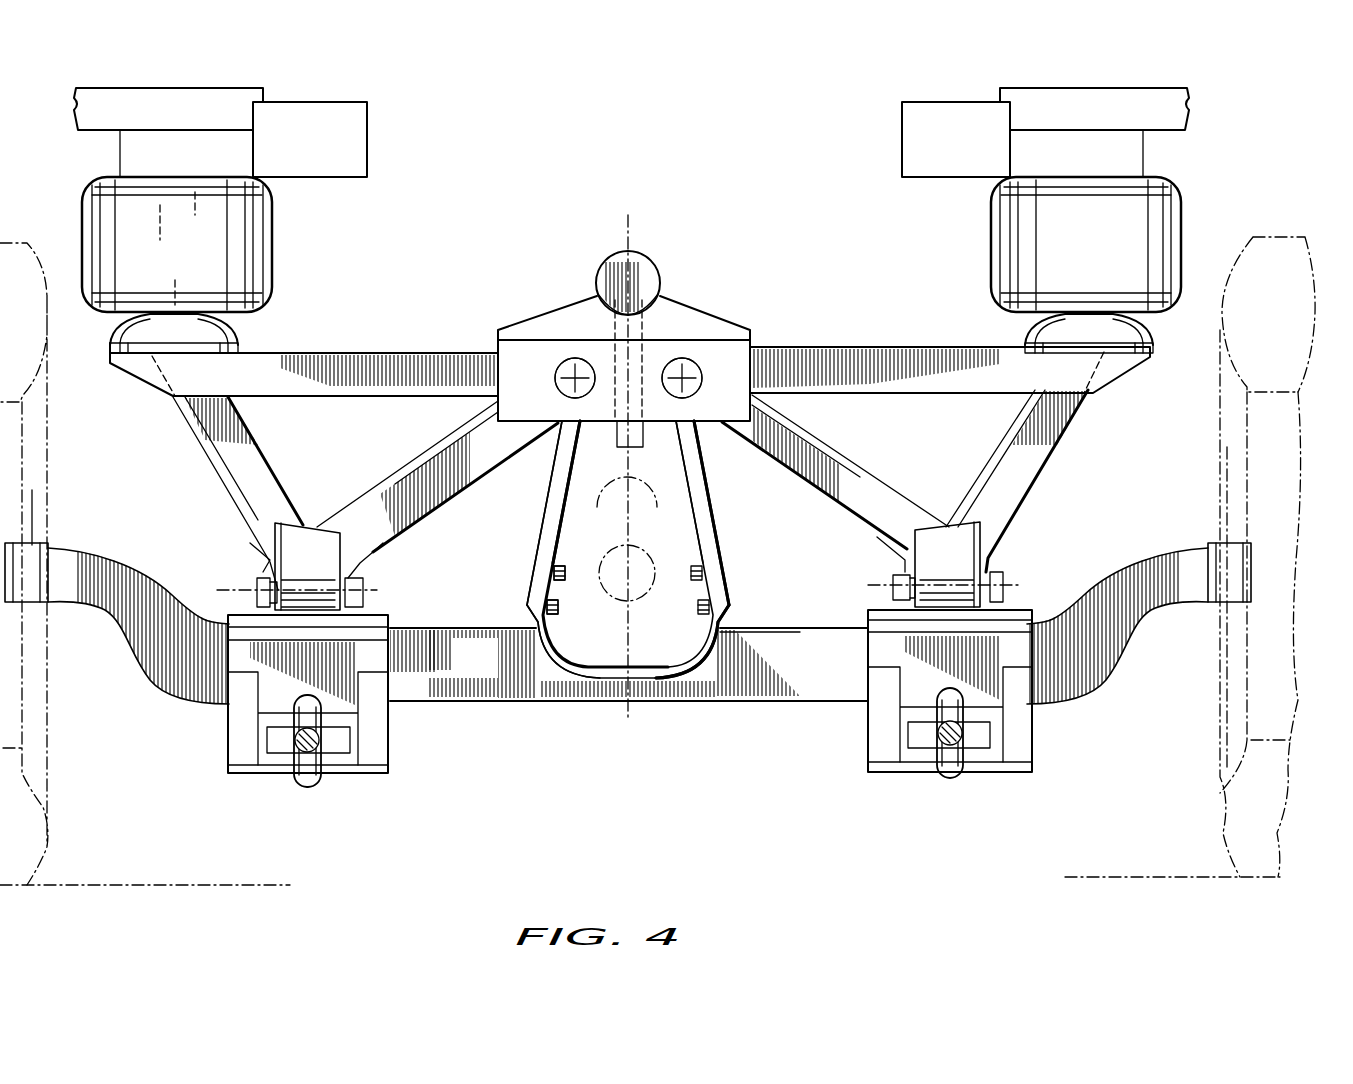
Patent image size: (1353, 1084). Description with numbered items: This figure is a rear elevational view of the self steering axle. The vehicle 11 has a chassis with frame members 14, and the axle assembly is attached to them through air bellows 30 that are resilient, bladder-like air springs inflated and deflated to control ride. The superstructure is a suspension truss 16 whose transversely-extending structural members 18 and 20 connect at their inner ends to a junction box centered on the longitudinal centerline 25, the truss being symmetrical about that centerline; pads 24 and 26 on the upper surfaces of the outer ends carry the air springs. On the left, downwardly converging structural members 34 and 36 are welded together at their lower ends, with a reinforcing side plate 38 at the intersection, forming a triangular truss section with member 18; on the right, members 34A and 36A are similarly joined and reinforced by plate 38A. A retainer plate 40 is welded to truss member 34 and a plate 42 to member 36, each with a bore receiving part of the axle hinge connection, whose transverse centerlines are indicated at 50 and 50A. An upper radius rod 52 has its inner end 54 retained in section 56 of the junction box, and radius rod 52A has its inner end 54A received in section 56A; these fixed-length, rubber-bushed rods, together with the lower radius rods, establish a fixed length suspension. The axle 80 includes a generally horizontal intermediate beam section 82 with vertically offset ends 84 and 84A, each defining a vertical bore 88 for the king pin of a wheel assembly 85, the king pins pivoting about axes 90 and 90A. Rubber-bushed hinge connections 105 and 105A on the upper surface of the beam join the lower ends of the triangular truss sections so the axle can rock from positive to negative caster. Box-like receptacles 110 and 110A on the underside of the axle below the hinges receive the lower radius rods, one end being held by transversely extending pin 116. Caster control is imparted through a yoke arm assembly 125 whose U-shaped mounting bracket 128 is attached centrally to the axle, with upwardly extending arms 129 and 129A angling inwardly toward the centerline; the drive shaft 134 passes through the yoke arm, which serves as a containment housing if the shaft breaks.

The vehicle 11 is at (75, 113).
The frame members 14 is at (367, 120).
The suspension truss 16 is at (820, 343).
The transversely-extending structural member 18 is at (320, 386).
The transversely-extending structural member 20 is at (753, 355).
The pad 24 is at (238, 343).
The longitudinal centerline 25 is at (629, 222).
The pad 26 is at (1152, 340).
The air bellows 30 is at (272, 252).
The structural member 34 is at (250, 458).
The structural member 34A is at (870, 495).
The structural member 36 is at (360, 492).
The structural member 36A is at (1052, 456).
The reinforcing side plate 38 is at (330, 553).
The reinforcing plate 38A is at (965, 550).
The retainer plate 40 is at (250, 548).
The plate 42 is at (378, 553).
The transverse centerline of axle hinge connection 50 is at (382, 590).
The transverse centerline of axle hinge connection 50A is at (1022, 588).
The upper radius rod 52 is at (563, 366).
The inner end of upper radius rod 54 is at (539, 338).
The radius rod 52A is at (700, 364).
The inner end of radius rod 54A is at (745, 338).
The section of upper radius rod junction box 56 is at (525, 422).
The section of upper radius rod junction box 56A is at (724, 422).
The axle 80 is at (797, 615).
The intermediate beam section 82 is at (505, 692).
The end of intermediate beam section 84 is at (72, 570).
The end of intermediate beam section 84A is at (1210, 550).
The wheel assembly 85 is at (52, 436).
The bore 88 is at (44, 545).
The king pin axis 90 is at (34, 505).
The king pin axis 90A is at (1225, 466).
The hinge connection 105 is at (248, 583).
The hinge connection 105A is at (886, 570).
The box-like receptacle 110 is at (392, 740).
The box-like receptacle 110A is at (1033, 755).
The transversely extending pin 116 is at (340, 752).
The yoke arm assembly 125 is at (730, 558).
The U-shaped mounting bracket 128 is at (573, 630).
The upwardly extending arm 129 is at (543, 525).
The upwardly extending arm 129A is at (712, 516).
The drive shaft 134 is at (660, 592).